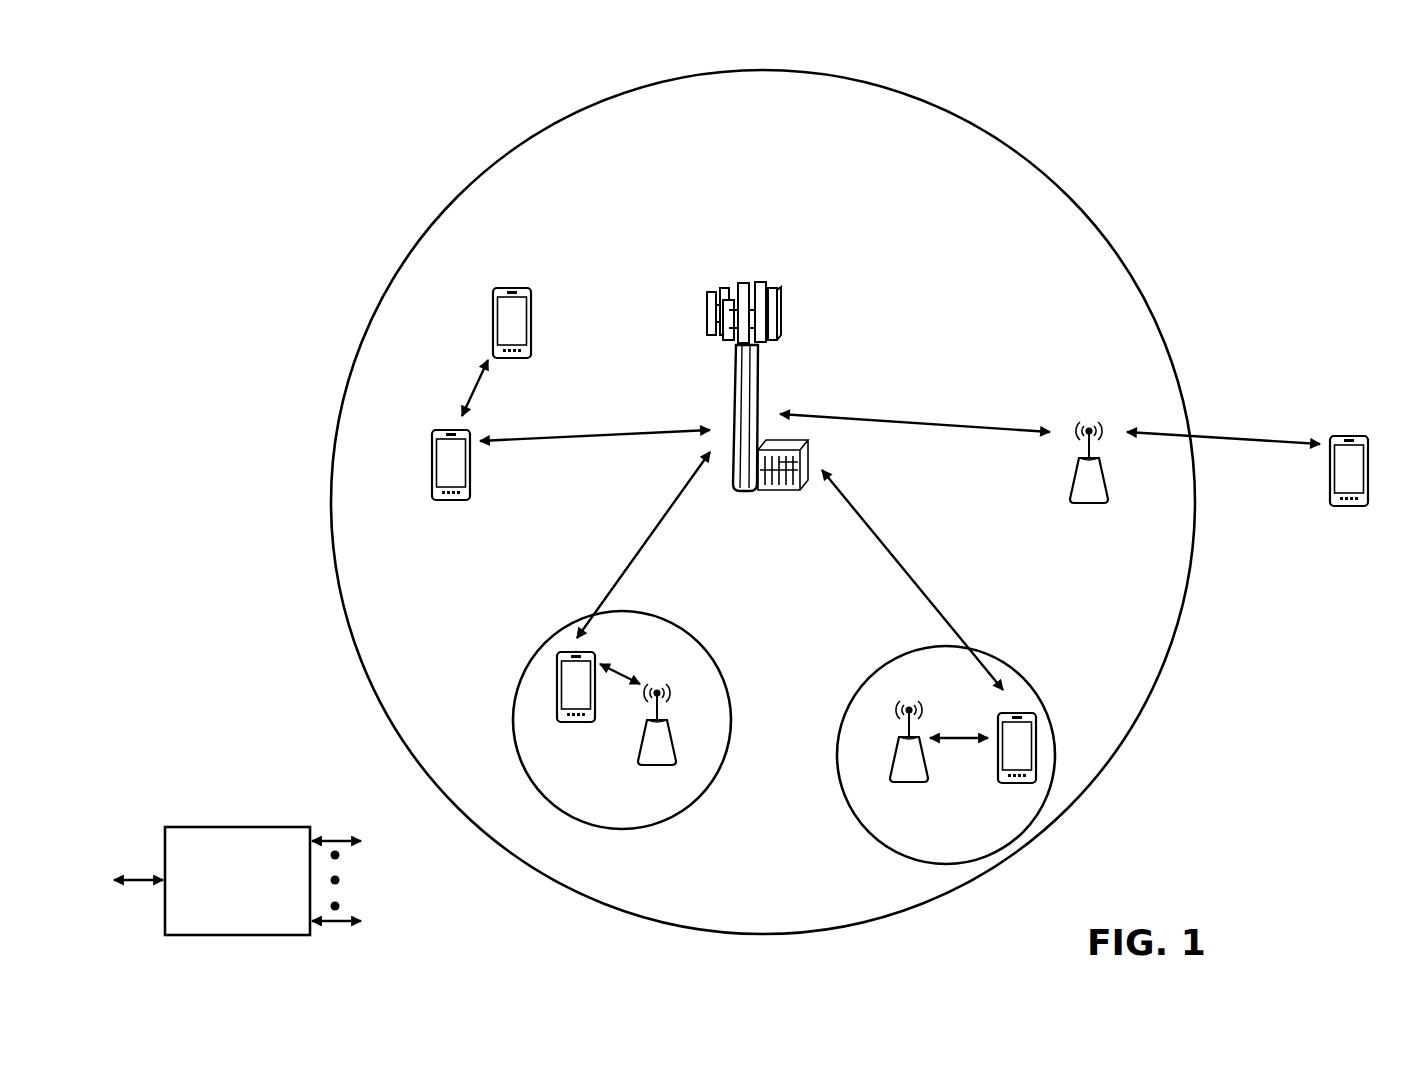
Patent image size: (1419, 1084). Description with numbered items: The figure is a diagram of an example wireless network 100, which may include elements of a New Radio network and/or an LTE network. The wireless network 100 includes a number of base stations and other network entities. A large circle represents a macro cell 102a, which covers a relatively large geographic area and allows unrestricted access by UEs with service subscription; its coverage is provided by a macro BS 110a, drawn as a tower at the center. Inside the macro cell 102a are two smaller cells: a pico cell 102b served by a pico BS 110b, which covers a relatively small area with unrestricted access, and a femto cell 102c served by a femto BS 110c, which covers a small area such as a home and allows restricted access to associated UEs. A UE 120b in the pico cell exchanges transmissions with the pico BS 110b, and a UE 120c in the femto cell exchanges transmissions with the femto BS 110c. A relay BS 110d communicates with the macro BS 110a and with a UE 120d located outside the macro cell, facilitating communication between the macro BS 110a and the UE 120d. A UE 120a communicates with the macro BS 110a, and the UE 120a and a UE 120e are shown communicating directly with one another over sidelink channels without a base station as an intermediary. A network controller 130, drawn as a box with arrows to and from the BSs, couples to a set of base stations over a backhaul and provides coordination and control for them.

The wireless network 100 is at (220, 66).
The macro cell 102a is at (1050, 178).
The pico cell 102b is at (716, 656).
The femto cell 102c is at (880, 668).
The macro BS 110a is at (752, 275).
The pico BS 110b is at (678, 752).
The femto BS 110c is at (893, 773).
The relay BS 110d is at (1089, 424).
The UE 120a is at (432, 462).
The UE 120b is at (561, 723).
The UE 120c is at (998, 784).
The UE 120d is at (1361, 434).
The UE 120e is at (492, 308).
The network controller 130 is at (235, 826).